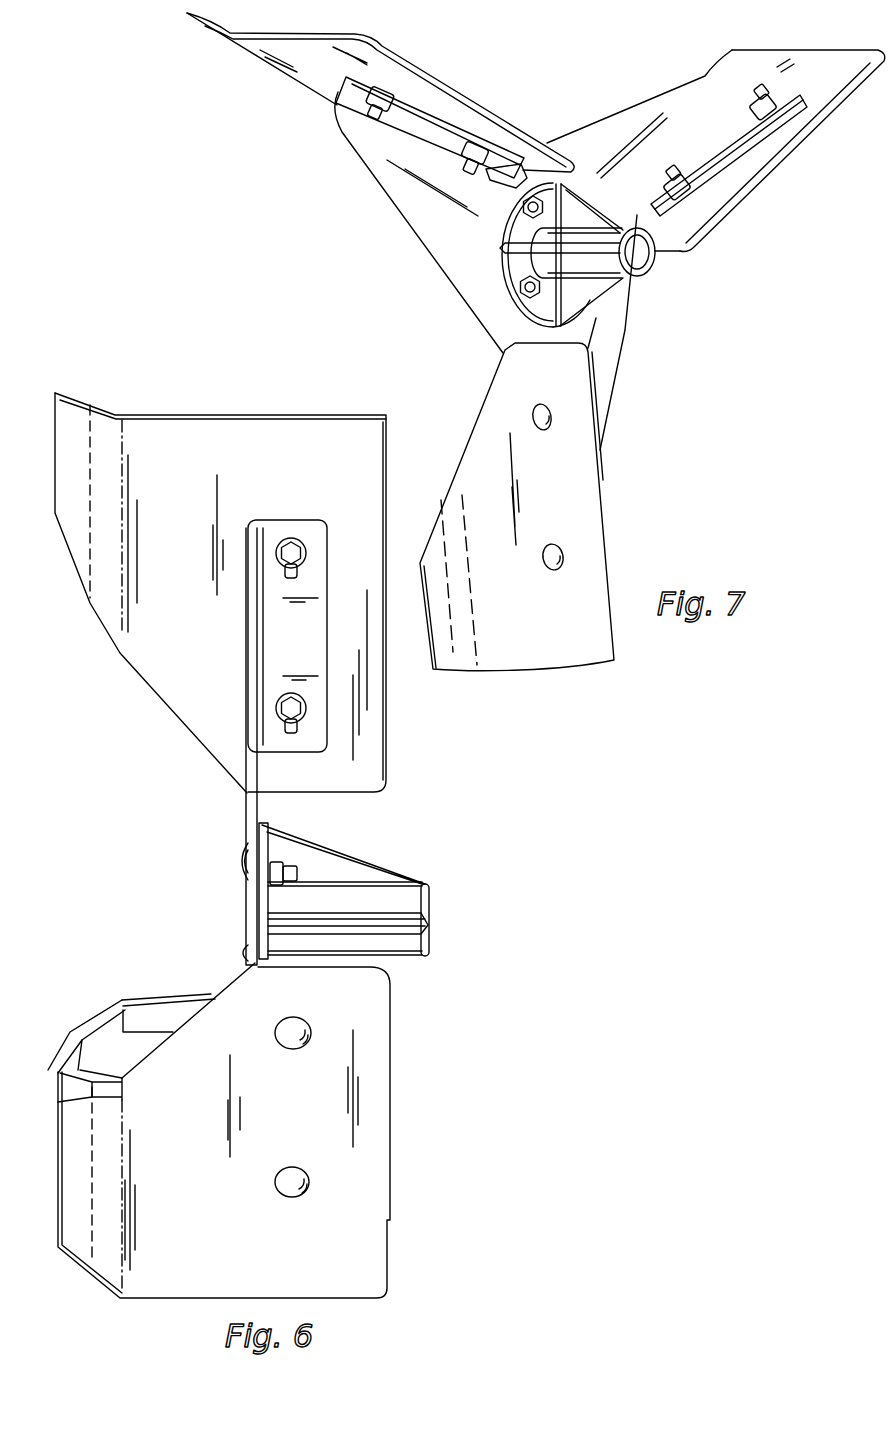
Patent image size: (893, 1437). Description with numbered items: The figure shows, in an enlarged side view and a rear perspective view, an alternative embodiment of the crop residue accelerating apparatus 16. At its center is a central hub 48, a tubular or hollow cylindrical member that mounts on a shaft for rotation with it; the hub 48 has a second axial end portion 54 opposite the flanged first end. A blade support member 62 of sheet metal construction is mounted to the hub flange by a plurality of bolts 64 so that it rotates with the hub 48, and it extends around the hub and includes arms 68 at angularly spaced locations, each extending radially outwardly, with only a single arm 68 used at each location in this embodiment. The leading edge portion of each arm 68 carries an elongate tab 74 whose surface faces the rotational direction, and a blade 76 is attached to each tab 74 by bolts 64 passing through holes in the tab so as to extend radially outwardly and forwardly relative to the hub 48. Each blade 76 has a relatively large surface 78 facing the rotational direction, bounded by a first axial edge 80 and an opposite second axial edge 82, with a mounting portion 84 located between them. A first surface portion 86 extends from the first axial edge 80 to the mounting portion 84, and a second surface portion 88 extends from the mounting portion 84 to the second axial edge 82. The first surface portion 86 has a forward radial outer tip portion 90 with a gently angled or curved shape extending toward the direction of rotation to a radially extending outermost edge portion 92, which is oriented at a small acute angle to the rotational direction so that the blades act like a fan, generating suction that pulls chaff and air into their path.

In FIG. 7, the crop residue accelerating apparatus 16 is at (750, 428).
In FIG. 7, the central hub 48 is at (655, 278).
In FIG. 6, the central hub 48 is at (428, 887).
In FIG. 7, the second axial end portion 54 is at (660, 257).
In FIG. 6, the second axial end portion 54 is at (430, 920).
In FIG. 7, the blade support member 62 is at (617, 360).
In FIG. 6, the blade support member 62 is at (245, 813).
In FIG. 7, the bolts 64 is at (547, 486).
In FIG. 6, the bolts 64 is at (300, 562).
In FIG. 7, the arms 68 is at (420, 246).
In FIG. 6, the arms 68 is at (247, 641).
In FIG. 7, the elongate tab 74 is at (410, 94).
In FIG. 6, the elongate tab 74 is at (326, 533).
In FIG. 7, the blade 76 is at (482, 105).
In FIG. 6, the blade 76 is at (231, 413).
In FIG. 7, the surface 78 is at (573, 630).
In FIG. 6, the surface 78 is at (363, 1007).
In FIG. 7, the first axial edge 80 is at (463, 443).
In FIG. 6, the first axial edge 80 is at (150, 687).
In FIG. 7, the second axial edge 82 is at (518, 125).
In FIG. 6, the second axial edge 82 is at (390, 1152).
In FIG. 7, the mounting portion 84 is at (573, 477).
In FIG. 6, the mounting portion 84 is at (330, 1103).
In FIG. 7, the first surface portion 86 is at (485, 632).
In FIG. 6, the first surface portion 86 is at (173, 1273).
In FIG. 7, the second surface portion 88 is at (593, 670).
In FIG. 6, the second surface portion 88 is at (363, 1284).
In FIG. 7, the forward radial outer tip portion 90 is at (443, 652).
In FIG. 6, the forward radial outer tip portion 90 is at (73, 1057).
In FIG. 7, the outermost edge portion 92 is at (217, 24).
In FIG. 6, the outermost edge portion 92 is at (48, 431).